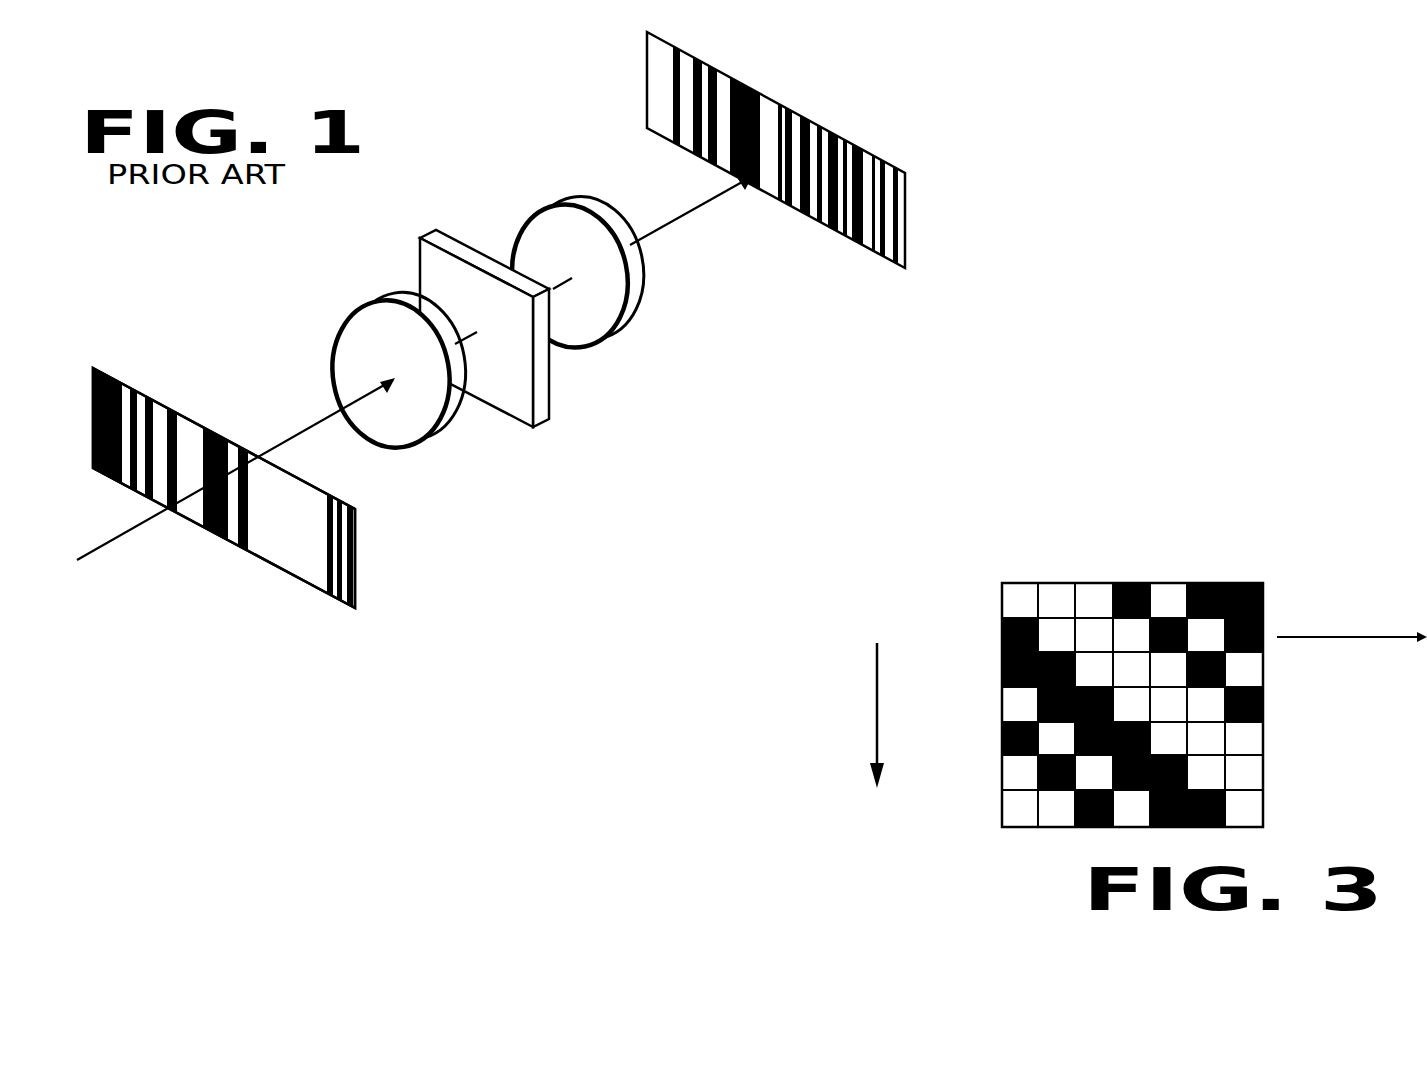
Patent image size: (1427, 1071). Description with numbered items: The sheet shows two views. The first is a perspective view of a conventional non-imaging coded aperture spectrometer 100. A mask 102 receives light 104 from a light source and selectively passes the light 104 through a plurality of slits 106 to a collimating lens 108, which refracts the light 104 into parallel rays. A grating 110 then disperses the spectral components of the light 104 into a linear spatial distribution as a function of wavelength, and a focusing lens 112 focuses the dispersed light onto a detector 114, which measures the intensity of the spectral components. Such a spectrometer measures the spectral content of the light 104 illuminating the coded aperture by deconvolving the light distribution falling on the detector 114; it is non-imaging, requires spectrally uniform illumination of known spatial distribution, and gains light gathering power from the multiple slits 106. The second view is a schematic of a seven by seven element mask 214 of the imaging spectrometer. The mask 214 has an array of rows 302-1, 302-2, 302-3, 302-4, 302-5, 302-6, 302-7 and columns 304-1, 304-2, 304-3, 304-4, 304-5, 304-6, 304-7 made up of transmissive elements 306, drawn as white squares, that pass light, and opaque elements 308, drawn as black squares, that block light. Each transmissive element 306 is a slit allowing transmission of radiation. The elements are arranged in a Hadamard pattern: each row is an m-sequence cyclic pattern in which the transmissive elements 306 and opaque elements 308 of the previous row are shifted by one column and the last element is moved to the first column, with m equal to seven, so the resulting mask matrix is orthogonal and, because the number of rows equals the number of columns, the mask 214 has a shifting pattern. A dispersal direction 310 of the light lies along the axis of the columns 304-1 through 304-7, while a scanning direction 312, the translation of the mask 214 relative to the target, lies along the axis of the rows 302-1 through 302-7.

In FIG. 1, the non-imaging coded aperture spectrometer 100 is at (552, 164).
In FIG. 1, the mask 102 is at (356, 601).
In FIG. 1, the light 104 is at (103, 549).
In FIG. 1, the slits 106 is at (185, 437).
In FIG. 1, the collimating lens 108 is at (365, 301).
In FIG. 1, the grating 110 is at (428, 236).
In FIG. 1, the focusing lens 112 is at (527, 211).
In FIG. 1, the detector 114 is at (905, 176).
In FIG. 3, the mask 214 is at (1264, 734).
In FIG. 3, the row 302-1 is at (1002, 600).
In FIG. 3, the row 302-2 is at (1002, 632).
In FIG. 3, the row 302-3 is at (1002, 668).
In FIG. 3, the row 302-4 is at (1002, 705).
In FIG. 3, the row 302-5 is at (1002, 740).
In FIG. 3, the row 302-6 is at (1002, 775).
In FIG. 3, the row 302-7 is at (1002, 810).
In FIG. 3, the column 304-1 is at (1021, 583).
In FIG. 3, the column 304-2 is at (1057, 583).
In FIG. 3, the column 304-3 is at (1092, 583).
In FIG. 3, the column 304-4 is at (1137, 583).
In FIG. 3, the column 304-5 is at (1168, 583).
In FIG. 3, the column 304-6 is at (1202, 583).
In FIG. 3, the column 304-7 is at (1235, 583).
In FIG. 3, the transmissive element 306 is at (1265, 797).
In FIG. 3, the opaque element 308 is at (1190, 827).
In FIG. 3, the dispersal direction 310 is at (1347, 641).
In FIG. 3, the scanning direction 312 is at (875, 712).